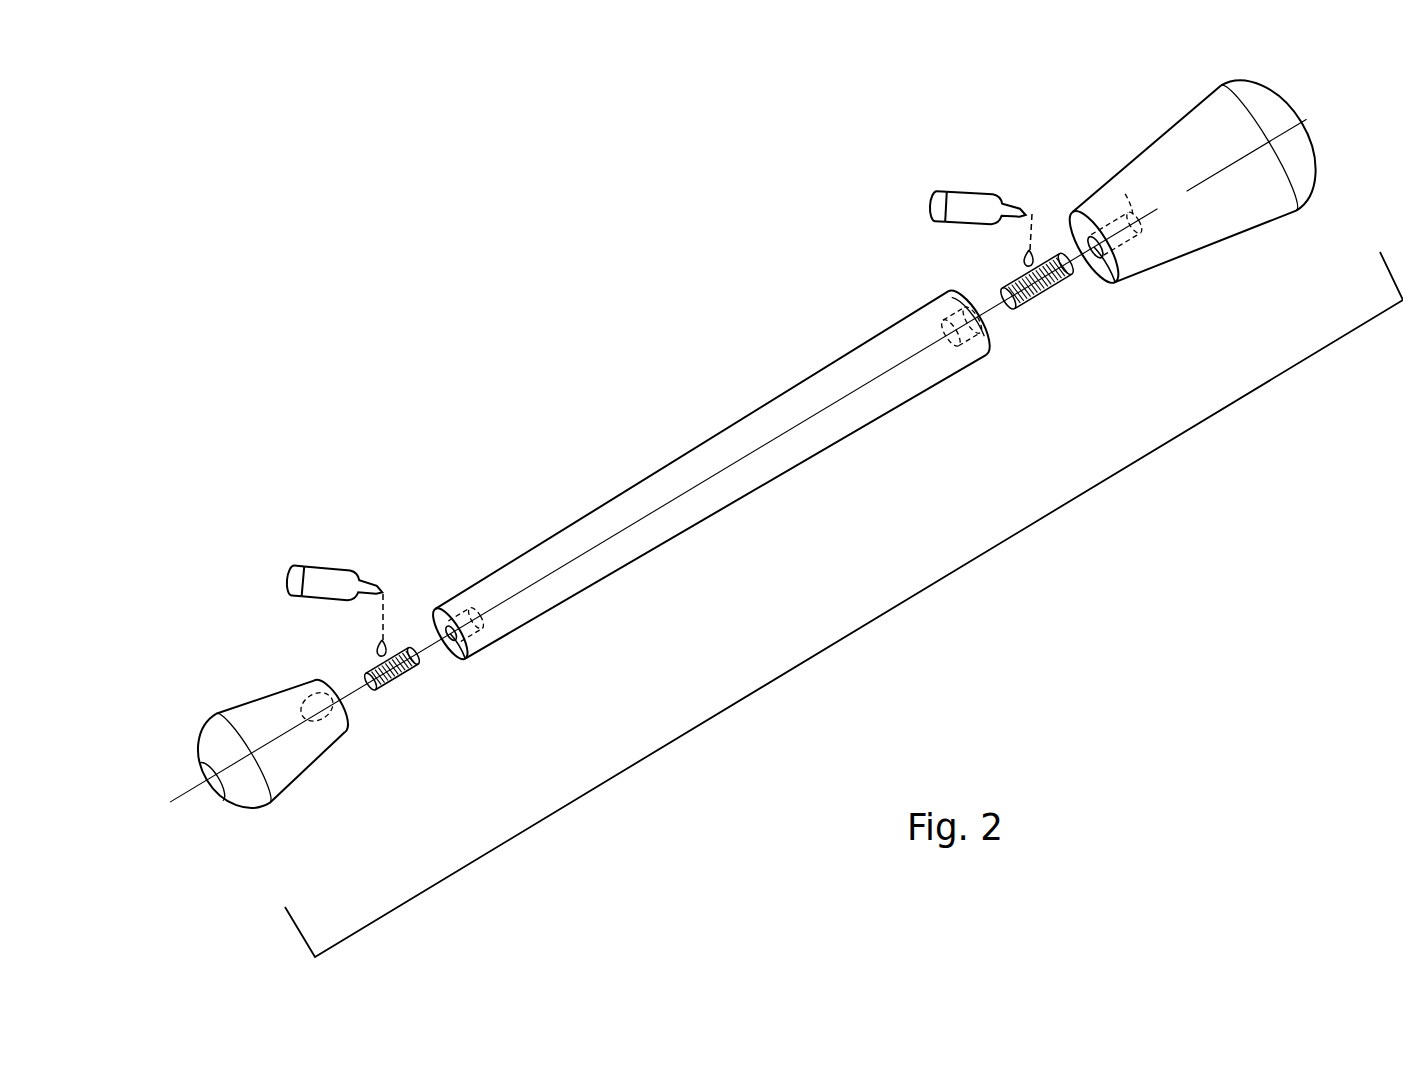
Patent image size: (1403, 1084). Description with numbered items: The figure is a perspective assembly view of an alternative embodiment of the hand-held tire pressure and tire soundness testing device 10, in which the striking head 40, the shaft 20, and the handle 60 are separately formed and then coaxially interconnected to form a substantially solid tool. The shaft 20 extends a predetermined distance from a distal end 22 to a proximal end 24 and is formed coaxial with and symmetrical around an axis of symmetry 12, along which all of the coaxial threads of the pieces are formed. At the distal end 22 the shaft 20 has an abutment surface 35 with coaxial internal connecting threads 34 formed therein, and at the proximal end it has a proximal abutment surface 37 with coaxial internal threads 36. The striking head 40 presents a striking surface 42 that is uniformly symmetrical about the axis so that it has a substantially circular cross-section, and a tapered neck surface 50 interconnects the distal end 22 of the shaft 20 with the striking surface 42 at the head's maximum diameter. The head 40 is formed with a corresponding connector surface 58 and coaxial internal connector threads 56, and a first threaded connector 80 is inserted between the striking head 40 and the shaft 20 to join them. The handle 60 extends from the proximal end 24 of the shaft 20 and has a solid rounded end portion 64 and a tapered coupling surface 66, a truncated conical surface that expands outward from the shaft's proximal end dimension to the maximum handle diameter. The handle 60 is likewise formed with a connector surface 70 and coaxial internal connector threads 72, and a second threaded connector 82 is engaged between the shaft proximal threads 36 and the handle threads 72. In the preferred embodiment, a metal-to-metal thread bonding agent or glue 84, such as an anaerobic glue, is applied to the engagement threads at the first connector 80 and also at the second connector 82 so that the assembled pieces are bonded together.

The hand-held tire pressure and tire soundness testing device 10 is at (853, 640).
The axis of symmetry 12 is at (823, 408).
The shaft 20 is at (695, 447).
The distal end 22 is at (948, 290).
The proximal end 24 is at (437, 610).
The internal connecting threads 34 is at (958, 345).
The abutment surface 35 is at (990, 340).
The internal threads 36 is at (470, 606).
The proximal abutment surface 37 is at (462, 665).
The striking head 40 is at (1128, 165).
The striking surface 42 is at (1305, 175).
The tapered neck surface 50 is at (1218, 245).
The internal connector threads 56 is at (1143, 191).
The connector surface 58 is at (1108, 282).
The handle 60 is at (240, 713).
The solid rounded end portion 64 is at (245, 803).
The tapered coupling surface 66 is at (303, 775).
The connector surface 70 is at (348, 723).
The internal connector threads 72 is at (333, 700).
The first threaded connector 80 is at (1040, 303).
The second threaded connector 82 is at (387, 688).
The thread bonding agent or glue 84 is at (380, 647).